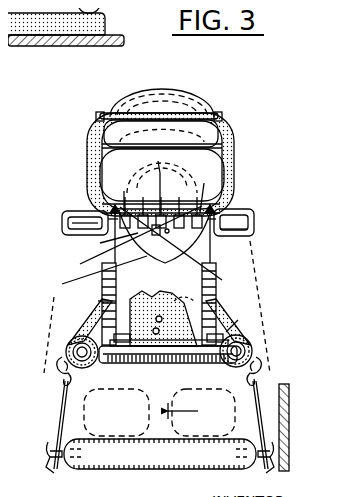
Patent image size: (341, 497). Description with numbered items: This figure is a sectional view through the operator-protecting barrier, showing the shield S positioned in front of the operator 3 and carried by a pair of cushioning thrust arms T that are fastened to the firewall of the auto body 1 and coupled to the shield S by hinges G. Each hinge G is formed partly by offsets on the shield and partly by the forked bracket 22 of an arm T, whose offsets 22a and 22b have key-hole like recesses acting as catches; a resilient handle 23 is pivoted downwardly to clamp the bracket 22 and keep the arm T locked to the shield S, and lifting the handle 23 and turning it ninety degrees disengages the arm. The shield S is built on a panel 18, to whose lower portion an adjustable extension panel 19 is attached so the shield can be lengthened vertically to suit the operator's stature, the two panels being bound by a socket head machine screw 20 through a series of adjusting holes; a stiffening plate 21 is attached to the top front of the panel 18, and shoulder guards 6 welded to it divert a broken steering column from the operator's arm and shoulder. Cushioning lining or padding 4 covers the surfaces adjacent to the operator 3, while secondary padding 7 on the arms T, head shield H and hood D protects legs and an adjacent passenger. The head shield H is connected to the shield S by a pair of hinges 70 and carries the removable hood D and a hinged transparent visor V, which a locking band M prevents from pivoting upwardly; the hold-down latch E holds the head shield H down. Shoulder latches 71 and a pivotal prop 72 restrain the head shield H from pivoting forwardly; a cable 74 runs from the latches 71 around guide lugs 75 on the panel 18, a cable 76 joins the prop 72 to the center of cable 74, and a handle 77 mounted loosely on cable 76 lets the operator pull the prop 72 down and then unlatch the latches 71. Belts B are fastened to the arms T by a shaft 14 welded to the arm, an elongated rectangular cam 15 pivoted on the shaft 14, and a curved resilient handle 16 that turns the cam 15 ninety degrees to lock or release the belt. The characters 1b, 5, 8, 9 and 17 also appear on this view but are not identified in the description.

The auto body 1 is at (288, 425).
The bottom roller 1b is at (142, 462).
The operator 3 is at (52, 303).
The cushioning lining or padding 4 is at (153, 60).
The height dimension 5 is at (68, 176).
The shoulder guard 6 is at (62, 222).
The secondary cushioning padding 7 is at (96, 124).
The width dimension 8 is at (182, 262).
The depth dimension 9 is at (143, 333).
The shaft 14 is at (247, 204).
The elongated rectangular cam 15 is at (148, 64).
The curved resilient handle 16 is at (56, 368).
The gap dimension 17 is at (185, 189).
The panel 18 is at (120, 362).
The adjustable extension panel 19 is at (202, 362).
The socket head machine screw 20 is at (268, 98).
The stiffening plate 21 is at (109, 246).
The forked bracket 22 is at (86, 334).
The offset 22a is at (215, 302).
The offset 22b is at (116, 345).
The handle 23 is at (243, 316).
The hinges 70 is at (168, 188).
The shoulder latches 71 is at (102, 218).
The pivotal prop 72 is at (153, 163).
The cable 74 is at (93, 276).
The guide lugs 75 is at (130, 241).
The cable 76 is at (184, 252).
The handle 77 is at (186, 297).
The belt B is at (52, 428).
The hood D is at (119, 97).
The hold-down latch E is at (139, 273).
The hinges G is at (96, 288).
The head shield H is at (91, 123).
The locking band M is at (213, 132).
The shield S is at (75, 252).
The cushioning thrust arms T is at (69, 337).
The transparent visor V is at (81, 158).